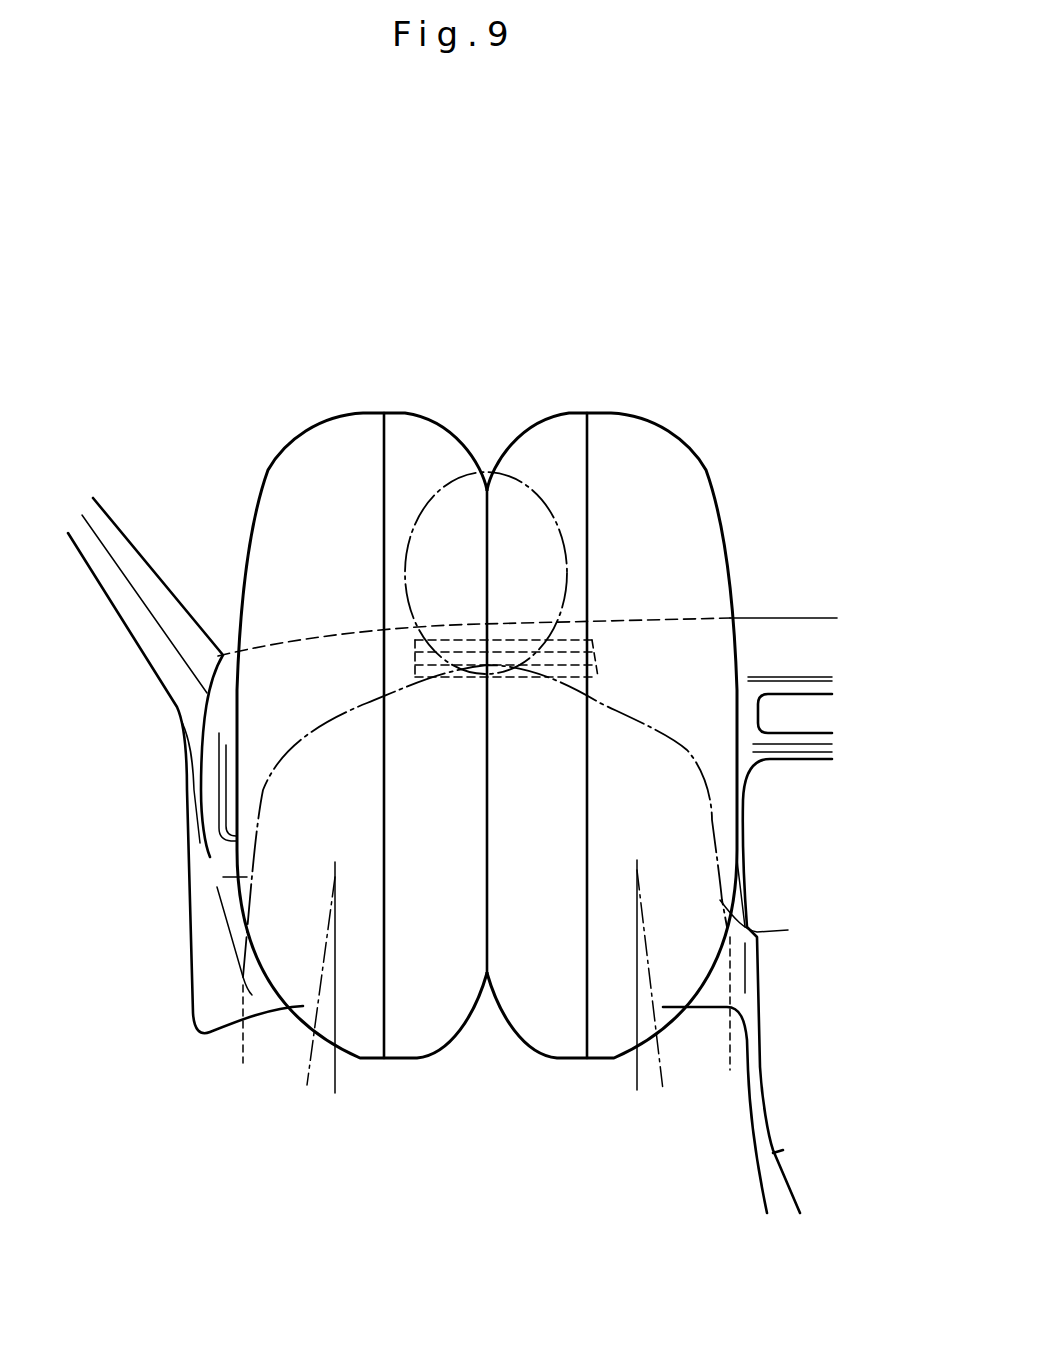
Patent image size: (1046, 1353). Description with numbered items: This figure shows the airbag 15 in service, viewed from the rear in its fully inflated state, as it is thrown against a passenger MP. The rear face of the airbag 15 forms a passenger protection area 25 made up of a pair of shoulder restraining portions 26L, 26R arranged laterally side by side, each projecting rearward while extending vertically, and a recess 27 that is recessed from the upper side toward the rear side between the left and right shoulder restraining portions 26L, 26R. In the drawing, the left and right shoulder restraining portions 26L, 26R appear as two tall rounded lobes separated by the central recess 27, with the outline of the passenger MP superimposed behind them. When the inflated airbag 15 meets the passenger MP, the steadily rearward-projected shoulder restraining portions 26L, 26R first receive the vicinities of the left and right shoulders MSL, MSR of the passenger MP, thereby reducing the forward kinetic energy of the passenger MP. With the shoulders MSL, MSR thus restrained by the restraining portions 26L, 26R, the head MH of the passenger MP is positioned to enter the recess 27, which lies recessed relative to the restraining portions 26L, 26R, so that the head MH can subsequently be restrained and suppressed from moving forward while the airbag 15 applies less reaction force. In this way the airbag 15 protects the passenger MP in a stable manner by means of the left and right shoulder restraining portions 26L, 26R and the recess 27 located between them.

The airbag 15 is at (560, 659).
The passenger protection area 25 is at (732, 575).
The left shoulder restraining portion 26L is at (370, 408).
The right shoulder restraining portion 26R is at (685, 660).
The recess 27 is at (486, 460).
The head MH is at (402, 622).
The left shoulder MSL is at (288, 775).
The right shoulder MSR is at (680, 777).
The passenger MP is at (323, 1090).